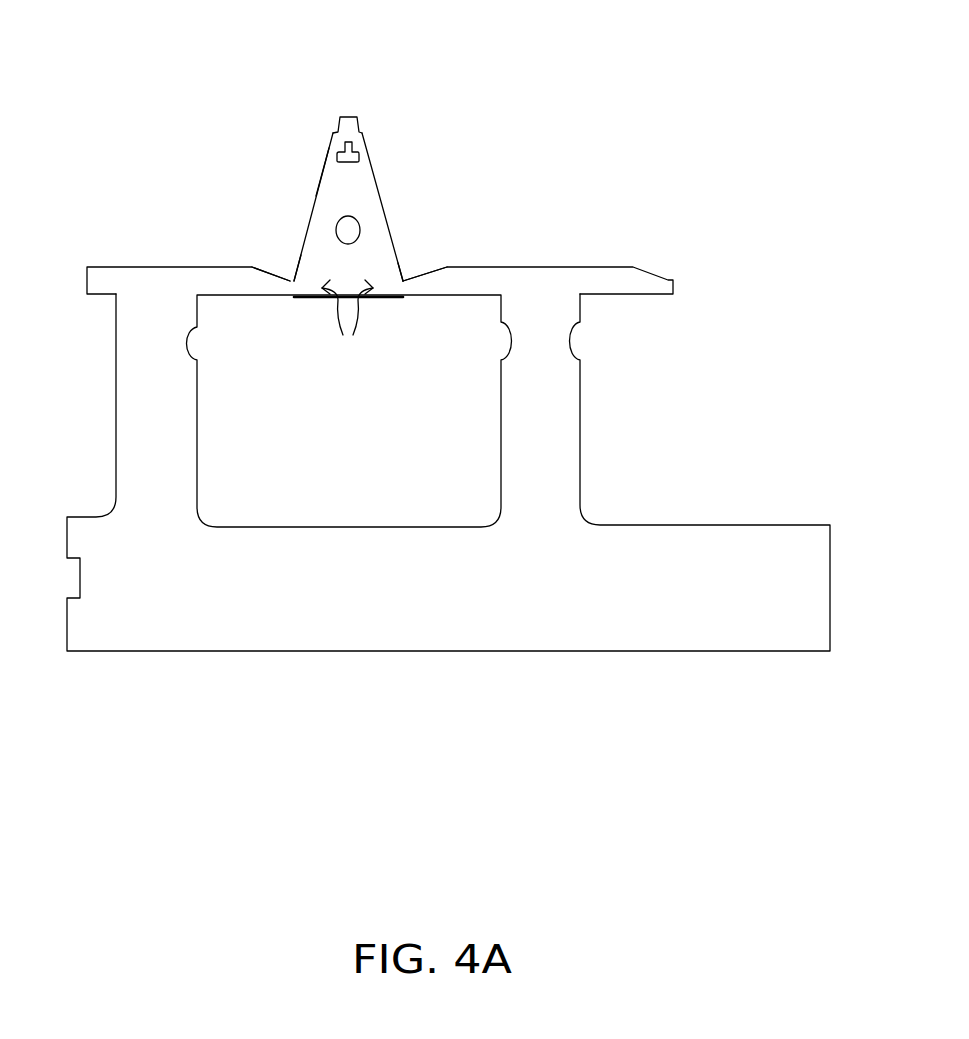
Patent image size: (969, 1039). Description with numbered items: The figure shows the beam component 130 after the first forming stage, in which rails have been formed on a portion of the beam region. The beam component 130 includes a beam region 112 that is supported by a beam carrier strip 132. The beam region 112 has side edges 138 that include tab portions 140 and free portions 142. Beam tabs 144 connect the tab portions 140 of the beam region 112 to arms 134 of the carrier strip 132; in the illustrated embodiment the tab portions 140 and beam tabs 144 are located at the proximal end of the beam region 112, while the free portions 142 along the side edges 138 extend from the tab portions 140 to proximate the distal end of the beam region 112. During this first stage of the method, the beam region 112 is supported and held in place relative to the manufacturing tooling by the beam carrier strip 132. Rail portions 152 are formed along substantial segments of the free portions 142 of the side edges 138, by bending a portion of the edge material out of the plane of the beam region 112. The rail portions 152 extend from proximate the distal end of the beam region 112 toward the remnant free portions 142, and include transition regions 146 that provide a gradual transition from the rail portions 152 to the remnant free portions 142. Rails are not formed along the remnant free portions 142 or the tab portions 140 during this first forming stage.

The beam component 130 is at (575, 97).
The beam carrier strip 132 is at (677, 412).
The arms 134 is at (180, 307).
The beam region 112 is at (350, 182).
The side edges 138 is at (328, 147).
The rail portions 152 is at (322, 175).
The free portions 142 is at (300, 263).
The transition regions 146 is at (399, 263).
The beam tabs 144 is at (292, 290).
The tab portions 140 is at (348, 324).